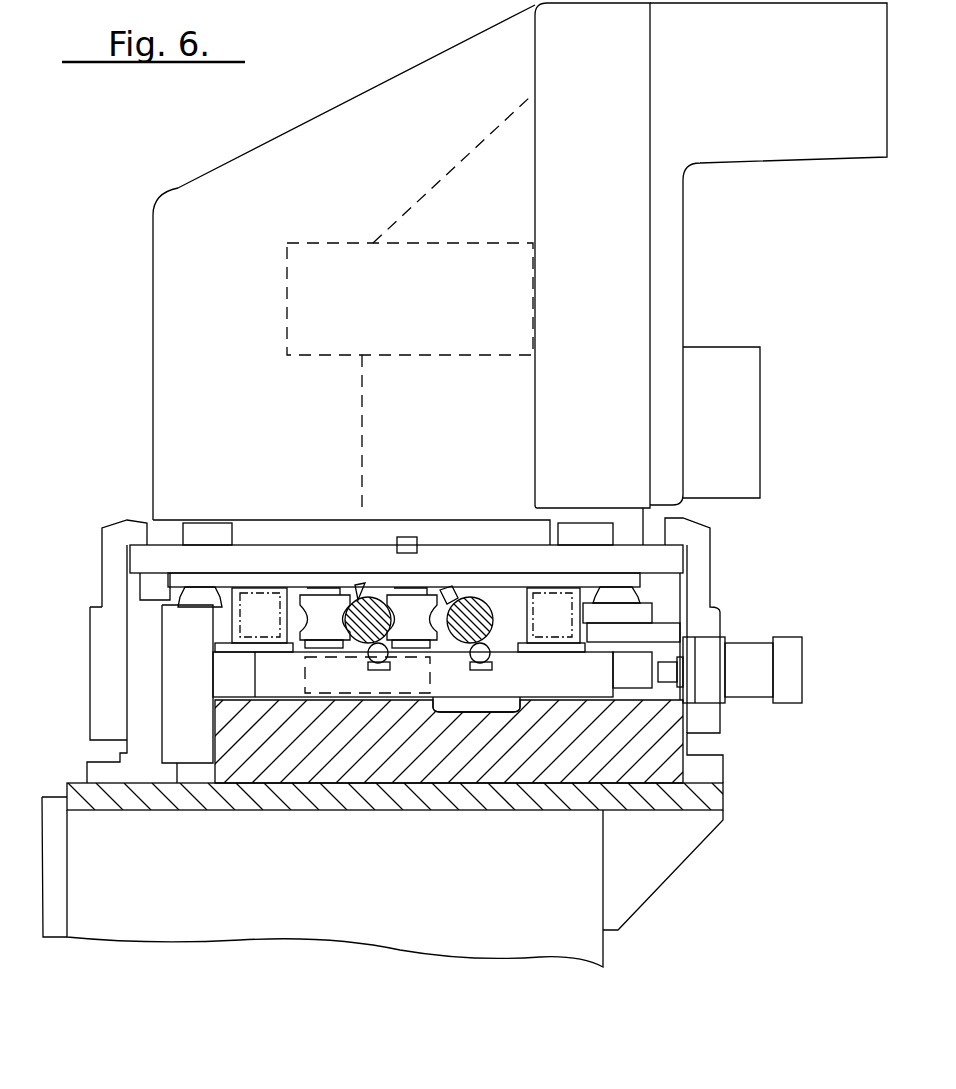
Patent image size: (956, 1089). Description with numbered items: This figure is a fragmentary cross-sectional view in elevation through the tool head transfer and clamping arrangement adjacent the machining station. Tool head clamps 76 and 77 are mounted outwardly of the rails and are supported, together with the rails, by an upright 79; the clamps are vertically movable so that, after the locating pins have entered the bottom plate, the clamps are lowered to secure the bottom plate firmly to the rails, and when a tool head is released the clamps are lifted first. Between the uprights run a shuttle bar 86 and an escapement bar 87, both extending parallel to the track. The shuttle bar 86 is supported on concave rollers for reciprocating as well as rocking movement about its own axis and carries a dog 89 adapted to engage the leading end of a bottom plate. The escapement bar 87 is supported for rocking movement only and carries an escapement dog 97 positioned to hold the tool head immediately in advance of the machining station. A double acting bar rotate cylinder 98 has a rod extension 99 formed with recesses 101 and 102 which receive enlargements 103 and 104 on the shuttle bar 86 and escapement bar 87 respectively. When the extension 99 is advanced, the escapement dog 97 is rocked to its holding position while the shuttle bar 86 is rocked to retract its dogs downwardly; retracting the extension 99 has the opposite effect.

The tool head clamp 76 is at (697, 550).
The tool head clamp 77 is at (116, 551).
The upright 79 is at (145, 697).
The shuttle bar 86 is at (360, 607).
The escapement bar 87 is at (484, 603).
The dog 89 is at (363, 586).
The escapement dog 97 is at (448, 590).
The bar rotate cylinder 98 is at (743, 652).
The rod extension 99 is at (563, 682).
The recess 101 is at (378, 657).
The recess 102 is at (477, 663).
The enlargement 103 is at (387, 662).
The enlargement 104 is at (486, 655).